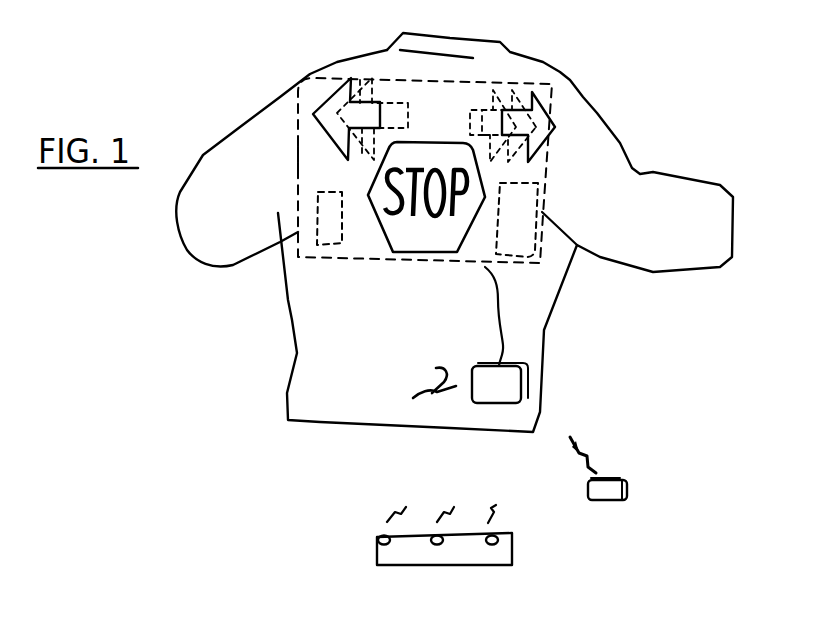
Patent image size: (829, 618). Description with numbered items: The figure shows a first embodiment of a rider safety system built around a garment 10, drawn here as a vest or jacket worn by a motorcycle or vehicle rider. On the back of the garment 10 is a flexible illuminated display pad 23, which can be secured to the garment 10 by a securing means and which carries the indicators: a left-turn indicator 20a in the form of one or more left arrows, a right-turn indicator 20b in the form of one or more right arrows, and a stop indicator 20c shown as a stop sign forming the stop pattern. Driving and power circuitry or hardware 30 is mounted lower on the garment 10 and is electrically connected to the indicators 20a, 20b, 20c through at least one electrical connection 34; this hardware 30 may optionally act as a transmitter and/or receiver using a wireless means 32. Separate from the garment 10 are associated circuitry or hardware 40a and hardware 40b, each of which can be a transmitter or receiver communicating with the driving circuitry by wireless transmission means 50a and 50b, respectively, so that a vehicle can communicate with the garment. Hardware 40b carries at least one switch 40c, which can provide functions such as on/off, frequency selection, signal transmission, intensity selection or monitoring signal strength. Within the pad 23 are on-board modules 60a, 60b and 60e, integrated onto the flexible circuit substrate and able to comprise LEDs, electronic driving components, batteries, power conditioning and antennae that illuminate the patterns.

The garment 10 is at (545, 62).
The left-turn indicator 20a is at (387, 95).
The right-turn indicator 20b is at (533, 103).
The stop indicator 20c is at (387, 237).
The pad 23 is at (302, 173).
The driving and power circuitry or hardware 30 is at (528, 377).
The wireless means 32 is at (434, 374).
The electrical connection 34 is at (498, 302).
The hardware 40a is at (628, 490).
The hardware 40b is at (437, 563).
The switch 40c is at (512, 550).
The wireless transmission means 50a is at (595, 453).
The wireless transmission means 50b is at (392, 503).
The on-board module 60a is at (323, 245).
The on-board module 60b is at (523, 238).
The light location 60e is at (300, 147).